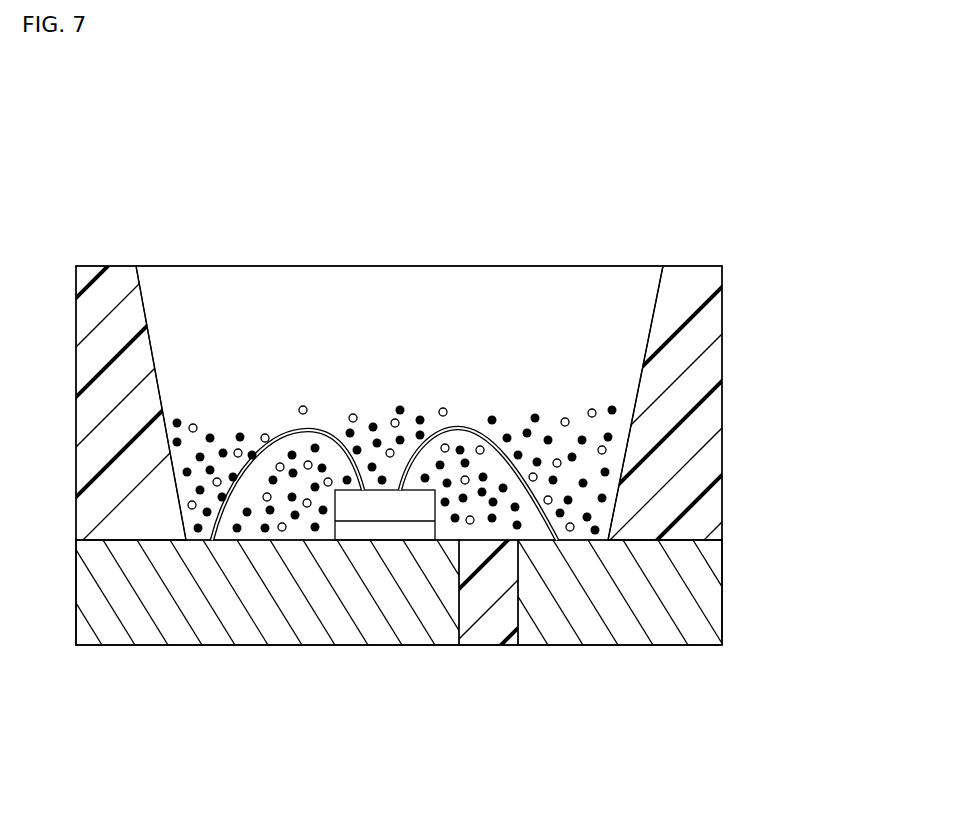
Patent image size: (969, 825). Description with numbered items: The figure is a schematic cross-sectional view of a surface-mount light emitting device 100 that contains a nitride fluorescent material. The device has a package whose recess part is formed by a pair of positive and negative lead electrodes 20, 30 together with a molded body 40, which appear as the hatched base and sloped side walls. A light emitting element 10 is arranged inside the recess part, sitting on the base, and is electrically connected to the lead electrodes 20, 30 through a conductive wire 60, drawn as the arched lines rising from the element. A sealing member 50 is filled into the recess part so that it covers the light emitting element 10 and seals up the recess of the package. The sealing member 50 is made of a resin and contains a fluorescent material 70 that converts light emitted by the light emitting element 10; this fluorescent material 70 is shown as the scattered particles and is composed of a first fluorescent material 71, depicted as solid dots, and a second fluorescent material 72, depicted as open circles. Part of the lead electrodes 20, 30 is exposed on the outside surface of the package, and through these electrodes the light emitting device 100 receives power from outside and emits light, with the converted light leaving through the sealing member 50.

The light emitting device 100 is at (699, 226).
The light emitting element 10 is at (390, 505).
The lead electrode 20 is at (500, 573).
The lead electrode 30 is at (568, 612).
The molded body 40 is at (397, 583).
The sealing member 50 is at (377, 300).
The conductive wire 60 is at (462, 426).
The fluorescent material 70 is at (395, 346).
The first fluorescent material 71 is at (217, 428).
The second fluorescent material 72 is at (275, 411).